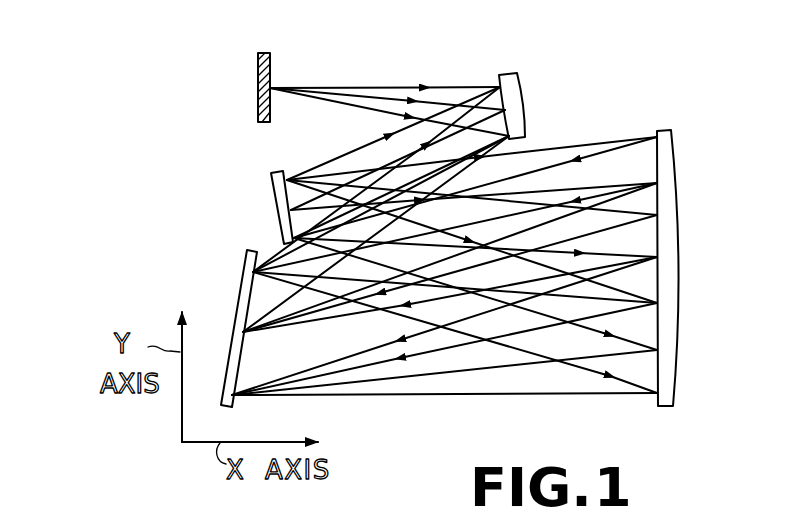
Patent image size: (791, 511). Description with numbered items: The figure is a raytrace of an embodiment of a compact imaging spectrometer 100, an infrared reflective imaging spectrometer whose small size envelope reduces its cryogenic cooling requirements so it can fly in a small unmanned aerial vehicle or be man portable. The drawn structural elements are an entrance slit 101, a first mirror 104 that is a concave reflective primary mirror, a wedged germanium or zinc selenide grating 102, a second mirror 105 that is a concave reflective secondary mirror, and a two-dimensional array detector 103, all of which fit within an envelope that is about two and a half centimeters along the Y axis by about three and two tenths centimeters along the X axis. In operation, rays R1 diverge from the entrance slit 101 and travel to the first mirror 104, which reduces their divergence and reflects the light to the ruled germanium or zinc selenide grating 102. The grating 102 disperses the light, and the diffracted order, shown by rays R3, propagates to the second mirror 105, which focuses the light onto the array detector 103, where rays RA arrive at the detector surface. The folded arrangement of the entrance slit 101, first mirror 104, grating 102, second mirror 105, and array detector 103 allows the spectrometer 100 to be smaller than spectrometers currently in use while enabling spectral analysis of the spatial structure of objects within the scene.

The compact imaging spectrometer 100 is at (628, 70).
The entrance slit 101 is at (258, 78).
The germanium or zinc selenide grating 102 is at (270, 197).
The array detector 103 is at (246, 283).
The first mirror 104 is at (521, 90).
The second mirror 105 is at (672, 147).
The rays R1 is at (355, 87).
The third ray R3 is at (586, 136).
The return ray RA is at (508, 394).